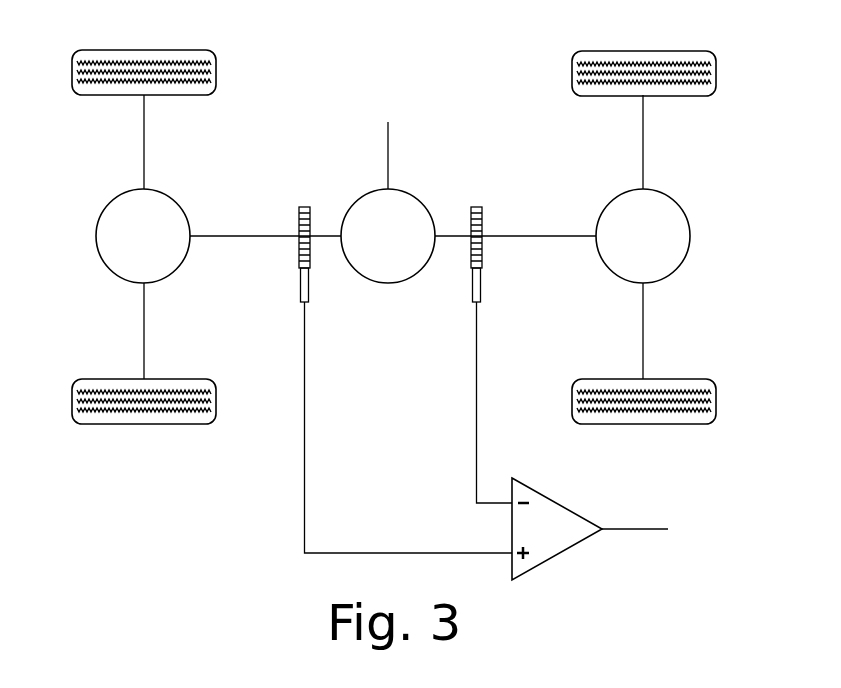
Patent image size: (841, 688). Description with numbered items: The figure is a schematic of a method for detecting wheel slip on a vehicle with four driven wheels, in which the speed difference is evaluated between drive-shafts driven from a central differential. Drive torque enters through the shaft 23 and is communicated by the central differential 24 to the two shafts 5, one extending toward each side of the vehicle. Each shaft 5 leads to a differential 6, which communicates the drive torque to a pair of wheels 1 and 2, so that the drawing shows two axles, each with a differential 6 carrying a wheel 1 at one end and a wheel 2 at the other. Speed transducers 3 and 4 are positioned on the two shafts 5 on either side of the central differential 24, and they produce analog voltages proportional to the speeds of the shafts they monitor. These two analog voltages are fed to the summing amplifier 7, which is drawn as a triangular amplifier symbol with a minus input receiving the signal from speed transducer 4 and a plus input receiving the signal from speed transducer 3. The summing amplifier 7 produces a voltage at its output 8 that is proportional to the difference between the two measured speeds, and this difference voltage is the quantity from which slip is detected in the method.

The wheel 1 is at (82, 52).
The wheel 2 is at (82, 418).
The speed transducer 3 is at (305, 302).
The speed transducer 4 is at (477, 302).
The shaft 5 is at (245, 235).
The differential 6 is at (105, 210).
The summing amplifier 7 is at (525, 487).
The voltage output 8 is at (612, 528).
The shaft 23 is at (388, 155).
The central differential 24 is at (423, 211).